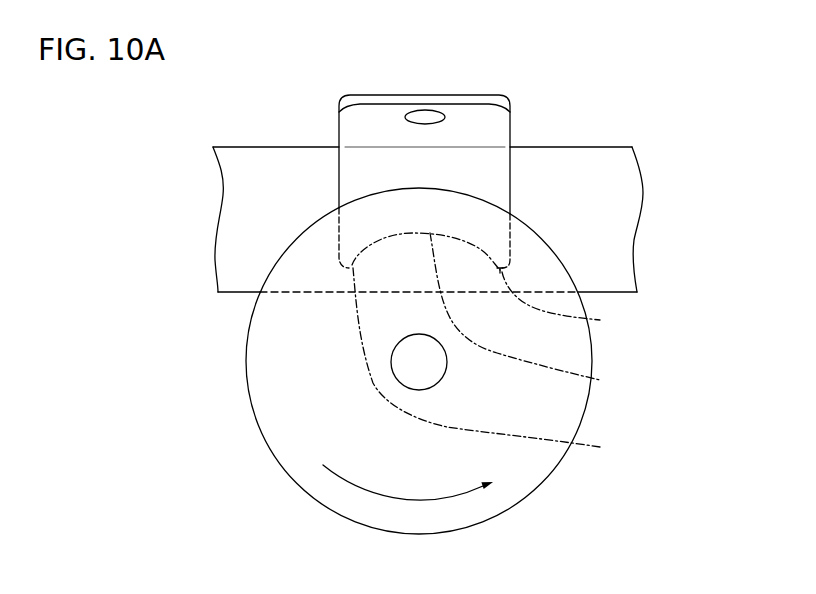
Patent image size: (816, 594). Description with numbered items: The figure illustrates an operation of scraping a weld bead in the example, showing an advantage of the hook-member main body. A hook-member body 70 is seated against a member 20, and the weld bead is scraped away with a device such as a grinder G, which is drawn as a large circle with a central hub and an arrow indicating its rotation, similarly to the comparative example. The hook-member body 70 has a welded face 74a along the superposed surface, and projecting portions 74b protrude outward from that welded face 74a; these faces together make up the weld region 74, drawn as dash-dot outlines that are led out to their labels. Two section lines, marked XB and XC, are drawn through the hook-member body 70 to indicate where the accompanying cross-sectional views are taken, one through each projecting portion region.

The main body / housing 20 is at (623, 233).
The hook-member body 70 is at (500, 131).
The groove portions 74 is at (542, 353).
The welded face 74a is at (600, 380).
The projecting portions 74b is at (600, 320).
The grinder G is at (255, 442).
The section line XB is at (349, 83).
The section line XC is at (420, 83).